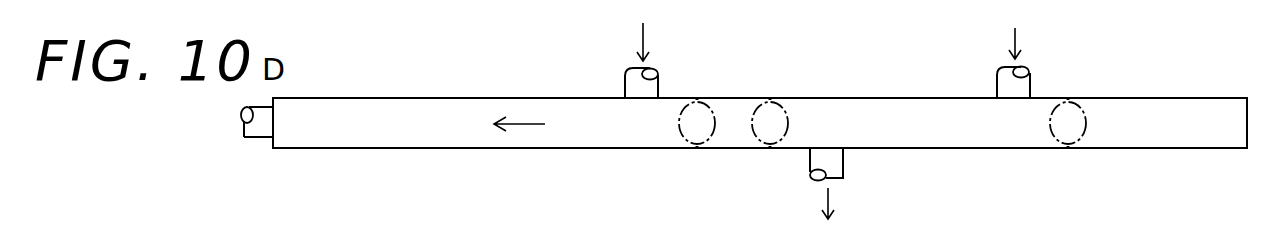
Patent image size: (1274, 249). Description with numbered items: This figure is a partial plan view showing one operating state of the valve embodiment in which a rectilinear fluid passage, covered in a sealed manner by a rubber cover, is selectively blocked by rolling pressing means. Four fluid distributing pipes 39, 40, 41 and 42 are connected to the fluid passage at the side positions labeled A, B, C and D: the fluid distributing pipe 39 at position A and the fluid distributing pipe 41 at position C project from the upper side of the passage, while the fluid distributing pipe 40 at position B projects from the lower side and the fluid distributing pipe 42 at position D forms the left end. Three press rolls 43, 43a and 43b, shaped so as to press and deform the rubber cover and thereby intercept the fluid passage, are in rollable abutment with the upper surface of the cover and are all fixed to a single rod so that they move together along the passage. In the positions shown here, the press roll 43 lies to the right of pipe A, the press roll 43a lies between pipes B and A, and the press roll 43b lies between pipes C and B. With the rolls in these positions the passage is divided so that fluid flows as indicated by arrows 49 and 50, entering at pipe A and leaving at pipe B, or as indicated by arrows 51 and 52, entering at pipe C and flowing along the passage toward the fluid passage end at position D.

The fluid distributing pipe 39 is at (1022, 85).
The fluid distributing pipe 40 is at (838, 165).
The fluid distributing pipe 41 is at (648, 89).
The fluid distributing pipe 42 is at (259, 138).
The press roll 43 is at (1072, 127).
The press roll 43a is at (773, 122).
The press roll 43b is at (702, 122).
The arrow 49 is at (1010, 42).
The arrow 50 is at (833, 200).
The arrow 51 is at (638, 38).
The arrow 52 is at (531, 124).